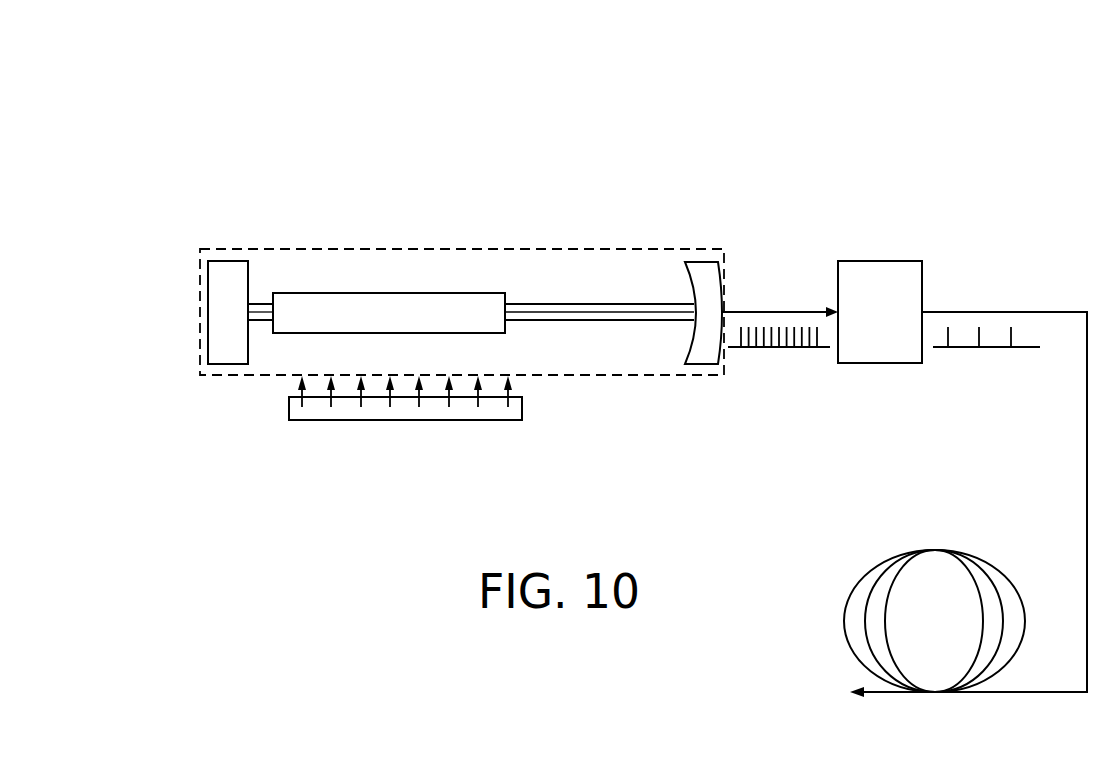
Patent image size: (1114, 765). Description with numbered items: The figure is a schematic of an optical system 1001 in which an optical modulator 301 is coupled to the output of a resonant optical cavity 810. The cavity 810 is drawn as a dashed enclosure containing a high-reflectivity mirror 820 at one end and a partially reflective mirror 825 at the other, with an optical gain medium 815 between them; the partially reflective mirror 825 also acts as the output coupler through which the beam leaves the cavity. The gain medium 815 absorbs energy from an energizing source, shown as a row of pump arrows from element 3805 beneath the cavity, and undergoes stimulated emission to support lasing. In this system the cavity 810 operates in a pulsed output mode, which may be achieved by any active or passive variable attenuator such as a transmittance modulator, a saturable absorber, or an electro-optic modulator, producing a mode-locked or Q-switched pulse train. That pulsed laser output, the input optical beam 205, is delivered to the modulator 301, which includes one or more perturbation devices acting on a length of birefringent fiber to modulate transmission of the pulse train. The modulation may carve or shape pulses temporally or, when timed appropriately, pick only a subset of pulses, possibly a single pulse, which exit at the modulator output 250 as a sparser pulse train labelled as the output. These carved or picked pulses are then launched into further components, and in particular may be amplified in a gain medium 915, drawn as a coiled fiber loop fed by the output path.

The optical system 1001 is at (212, 134).
The optical cavity 810 is at (340, 249).
The high-reflectivity mirror 820 is at (225, 262).
The optical gain medium 815 is at (440, 298).
The partially reflective mirror 825 is at (690, 262).
The pump source array 3805 is at (289, 420).
The input optical beam 205 is at (772, 310).
The optical modulator 301 is at (900, 329).
The modulator output 250 is at (942, 310).
The gain medium 915 is at (964, 636).